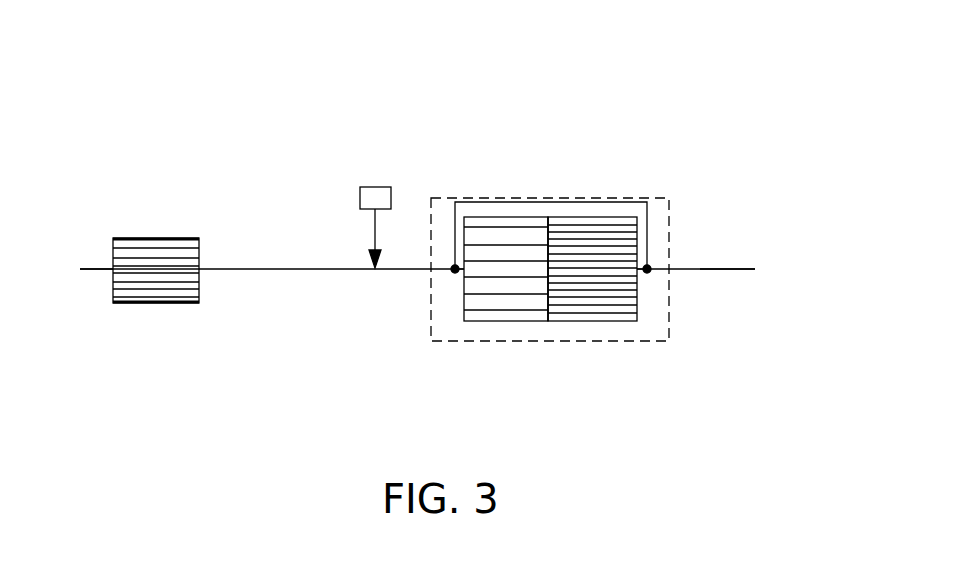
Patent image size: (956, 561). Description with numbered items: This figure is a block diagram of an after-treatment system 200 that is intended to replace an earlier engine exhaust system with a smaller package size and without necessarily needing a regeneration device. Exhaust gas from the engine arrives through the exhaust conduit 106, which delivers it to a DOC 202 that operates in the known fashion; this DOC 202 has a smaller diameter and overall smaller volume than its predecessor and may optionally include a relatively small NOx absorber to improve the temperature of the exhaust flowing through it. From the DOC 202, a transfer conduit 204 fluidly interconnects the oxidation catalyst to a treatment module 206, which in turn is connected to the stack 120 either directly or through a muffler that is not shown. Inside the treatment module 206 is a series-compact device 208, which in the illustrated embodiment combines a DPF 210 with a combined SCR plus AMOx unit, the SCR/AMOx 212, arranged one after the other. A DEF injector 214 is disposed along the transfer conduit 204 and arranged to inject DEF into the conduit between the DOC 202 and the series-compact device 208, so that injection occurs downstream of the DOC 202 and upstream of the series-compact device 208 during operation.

The exhaust conduit 106 is at (100, 272).
The stack 120 is at (725, 272).
The after-treatment system 200 is at (701, 390).
The DOC 202 is at (166, 238).
The transfer conduit 204 is at (288, 272).
The treatment module 206 is at (671, 230).
The series-compact device 208 is at (549, 338).
The DPF 210 is at (497, 223).
The SCR/AMOx 212 is at (613, 225).
The DEF injector 214 is at (375, 186).